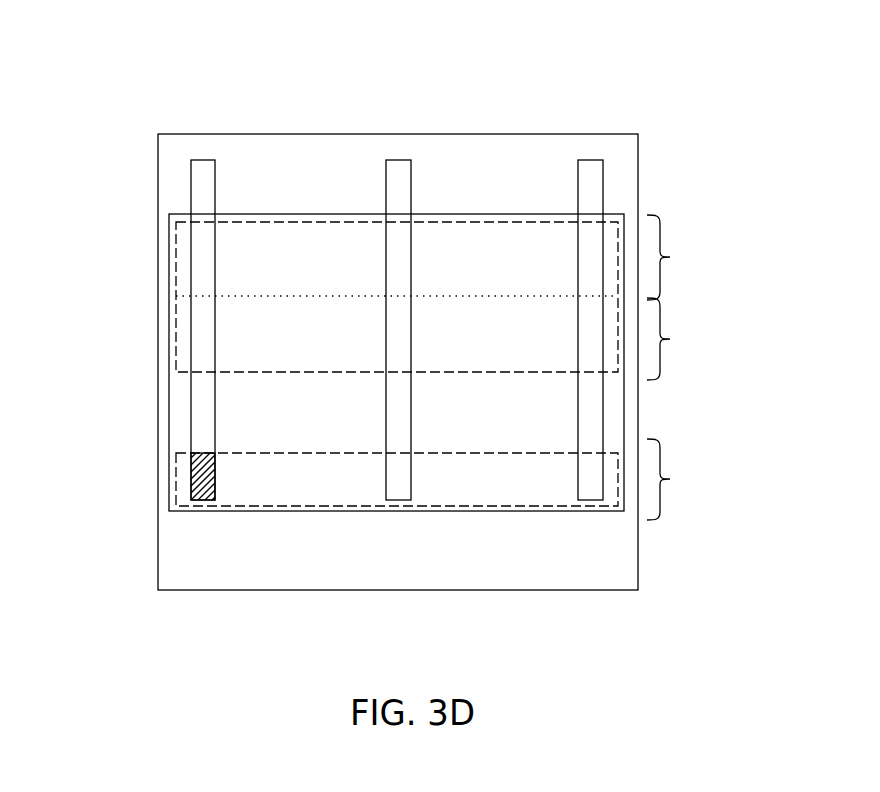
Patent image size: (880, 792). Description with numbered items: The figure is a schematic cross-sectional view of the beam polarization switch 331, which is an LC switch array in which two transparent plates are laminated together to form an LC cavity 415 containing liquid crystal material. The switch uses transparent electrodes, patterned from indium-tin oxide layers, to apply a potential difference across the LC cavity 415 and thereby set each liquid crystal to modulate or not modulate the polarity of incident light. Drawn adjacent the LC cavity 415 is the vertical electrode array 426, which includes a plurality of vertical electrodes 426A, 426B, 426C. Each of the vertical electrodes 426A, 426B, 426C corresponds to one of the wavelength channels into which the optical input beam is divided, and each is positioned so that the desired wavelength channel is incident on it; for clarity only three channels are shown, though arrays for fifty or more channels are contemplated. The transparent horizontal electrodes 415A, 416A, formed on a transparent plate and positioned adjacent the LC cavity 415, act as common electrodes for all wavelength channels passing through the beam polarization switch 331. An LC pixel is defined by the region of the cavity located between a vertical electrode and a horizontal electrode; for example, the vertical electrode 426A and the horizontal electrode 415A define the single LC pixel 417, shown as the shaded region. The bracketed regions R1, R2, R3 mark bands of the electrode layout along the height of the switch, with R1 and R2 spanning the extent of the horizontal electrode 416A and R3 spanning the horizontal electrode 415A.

The beam polarization switch 331 is at (628, 133).
The vertical electrode array 426 is at (462, 284).
The vertical electrode 426A is at (203, 173).
The vertical electrode 426B is at (400, 173).
The vertical electrode 426C is at (593, 170).
The transparent horizontal electrode 416A is at (175, 334).
The LC cavity 415 is at (170, 458).
The transparent horizontal electrode 415A is at (175, 497).
The LC pixel 417 is at (204, 488).
The region R1 is at (674, 257).
The region R2 is at (674, 339).
The region R3 is at (674, 479).